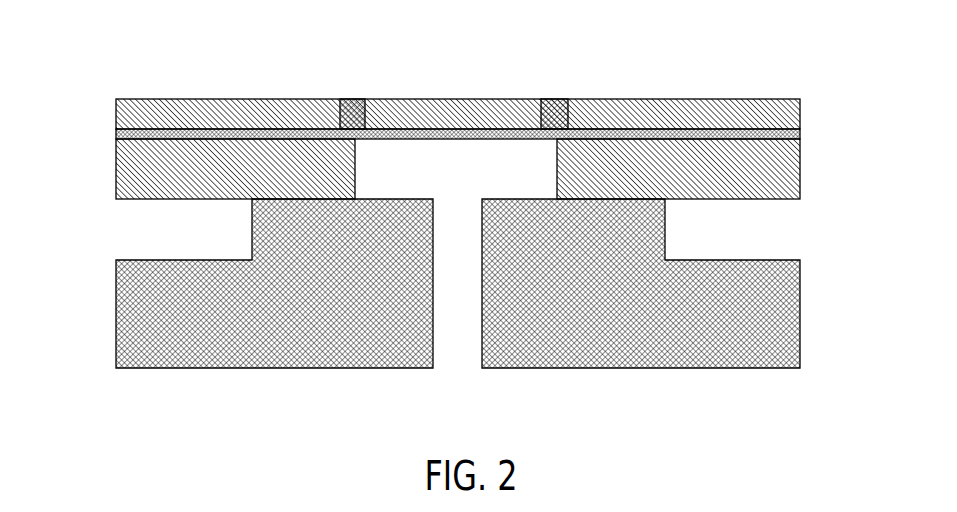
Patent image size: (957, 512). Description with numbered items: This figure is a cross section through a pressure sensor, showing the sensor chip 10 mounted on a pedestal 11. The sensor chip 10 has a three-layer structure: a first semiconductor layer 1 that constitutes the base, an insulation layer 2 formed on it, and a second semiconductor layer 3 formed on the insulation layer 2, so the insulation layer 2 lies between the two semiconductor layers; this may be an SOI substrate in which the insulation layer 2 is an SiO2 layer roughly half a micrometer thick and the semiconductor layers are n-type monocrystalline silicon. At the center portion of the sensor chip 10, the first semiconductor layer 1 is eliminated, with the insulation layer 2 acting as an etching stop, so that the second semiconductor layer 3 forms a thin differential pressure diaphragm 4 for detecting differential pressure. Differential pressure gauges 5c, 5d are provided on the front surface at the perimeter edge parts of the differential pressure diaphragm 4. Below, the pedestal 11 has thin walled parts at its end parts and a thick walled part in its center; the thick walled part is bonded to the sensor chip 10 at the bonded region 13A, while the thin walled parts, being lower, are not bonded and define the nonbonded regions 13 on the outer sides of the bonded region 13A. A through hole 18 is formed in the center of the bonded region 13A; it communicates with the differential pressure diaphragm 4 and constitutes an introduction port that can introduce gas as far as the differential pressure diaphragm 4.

The sensor chip 10 is at (506, 149).
The second semiconductor layer 3 is at (800, 118).
The insulation layer 2 is at (800, 136).
The first semiconductor layer 1 is at (484, 169).
The differential pressure diaphragm 4 is at (454, 64).
The differential pressure gauge 5c is at (354, 98).
The differential pressure gauge 5d is at (541, 89).
The pedestal 11 is at (800, 297).
The nonbonded region 13 is at (127, 219).
The bonded region 13A is at (316, 214).
The through hole 18 is at (433, 343).